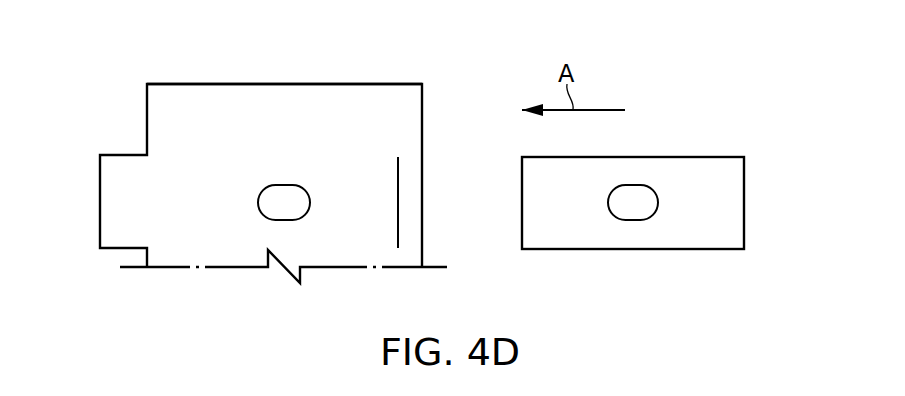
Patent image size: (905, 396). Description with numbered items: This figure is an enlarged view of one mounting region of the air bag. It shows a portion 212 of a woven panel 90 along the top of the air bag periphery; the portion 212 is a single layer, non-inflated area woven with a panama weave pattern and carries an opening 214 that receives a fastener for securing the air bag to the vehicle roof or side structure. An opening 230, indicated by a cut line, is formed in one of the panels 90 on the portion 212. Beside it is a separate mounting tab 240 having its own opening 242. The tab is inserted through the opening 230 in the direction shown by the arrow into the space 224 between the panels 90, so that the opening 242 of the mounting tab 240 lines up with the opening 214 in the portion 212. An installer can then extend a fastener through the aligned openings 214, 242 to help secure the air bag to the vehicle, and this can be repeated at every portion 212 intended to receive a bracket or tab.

The panel 90 is at (372, 108).
The portion 212 is at (290, 108).
The opening 214 is at (238, 203).
The space 224 is at (188, 128).
The opening 230 is at (398, 182).
The mounting tab 240 is at (744, 205).
The opening 242 is at (632, 234).